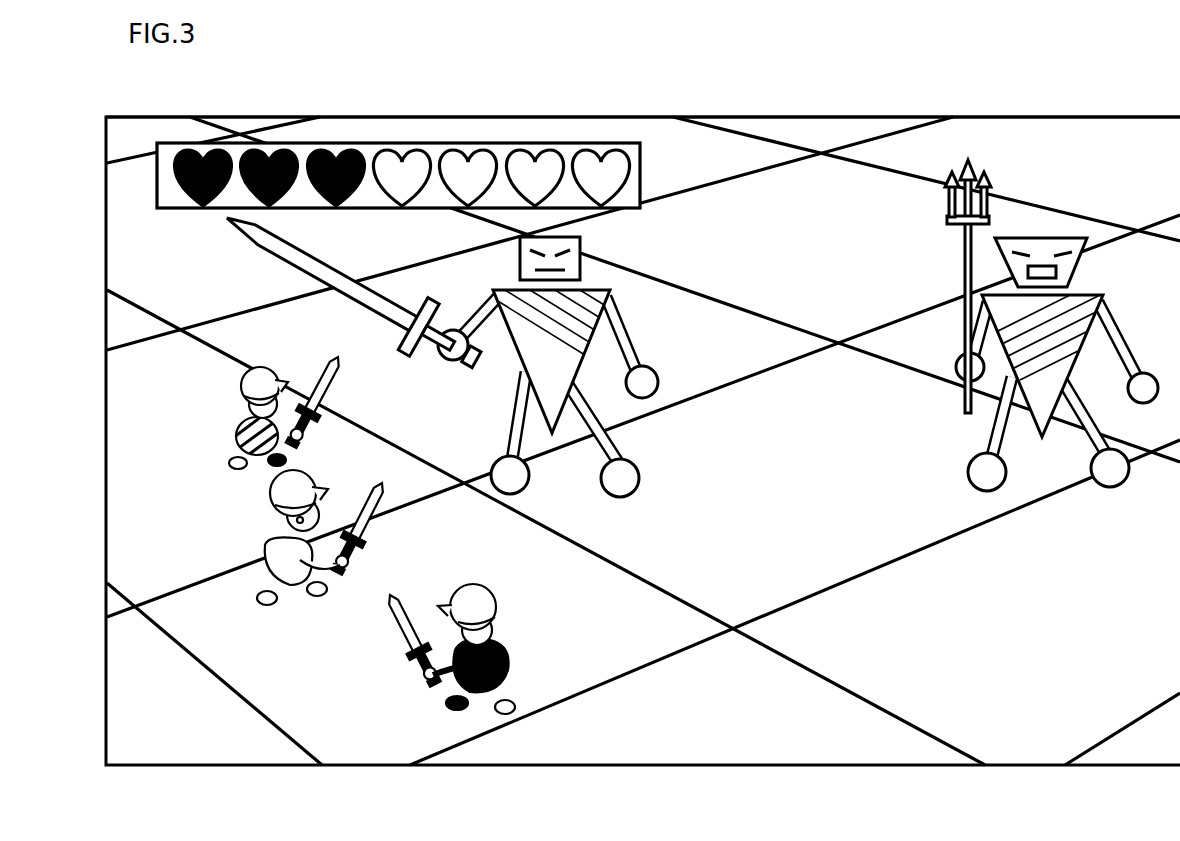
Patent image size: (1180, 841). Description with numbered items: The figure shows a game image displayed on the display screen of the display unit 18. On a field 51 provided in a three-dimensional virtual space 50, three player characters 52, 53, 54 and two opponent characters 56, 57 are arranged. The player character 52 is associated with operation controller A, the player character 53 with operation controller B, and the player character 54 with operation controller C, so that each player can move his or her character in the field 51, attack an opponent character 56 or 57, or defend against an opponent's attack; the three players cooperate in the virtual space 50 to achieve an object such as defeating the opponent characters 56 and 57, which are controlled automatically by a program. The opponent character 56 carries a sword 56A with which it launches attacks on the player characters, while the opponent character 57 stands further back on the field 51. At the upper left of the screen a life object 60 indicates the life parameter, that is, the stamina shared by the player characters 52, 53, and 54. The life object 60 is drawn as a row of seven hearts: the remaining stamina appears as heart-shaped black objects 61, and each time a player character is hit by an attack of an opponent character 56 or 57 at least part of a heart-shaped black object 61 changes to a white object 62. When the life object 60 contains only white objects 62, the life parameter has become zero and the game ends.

The display unit 18 is at (1118, 116).
The three-dimensional virtual space 50 is at (127, 125).
The field 51 is at (800, 210).
The player character 52 is at (243, 437).
The player character 53 is at (282, 548).
The player character 54 is at (455, 686).
The opponent character 56 is at (590, 308).
The sword 56A is at (285, 258).
The opponent character 57 is at (1070, 308).
The life object 60 is at (398, 138).
The heart-shaped black object 61 is at (285, 158).
The white object 62 is at (480, 176).